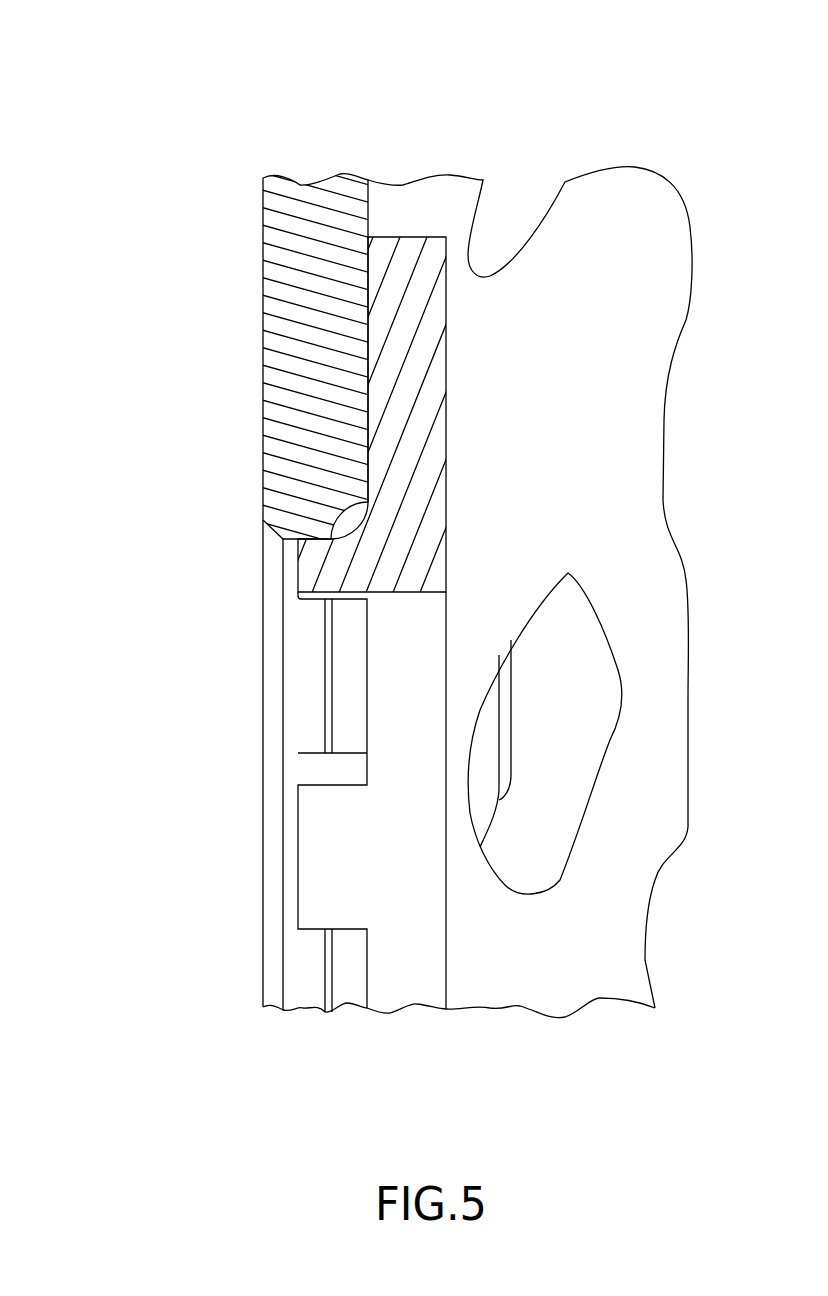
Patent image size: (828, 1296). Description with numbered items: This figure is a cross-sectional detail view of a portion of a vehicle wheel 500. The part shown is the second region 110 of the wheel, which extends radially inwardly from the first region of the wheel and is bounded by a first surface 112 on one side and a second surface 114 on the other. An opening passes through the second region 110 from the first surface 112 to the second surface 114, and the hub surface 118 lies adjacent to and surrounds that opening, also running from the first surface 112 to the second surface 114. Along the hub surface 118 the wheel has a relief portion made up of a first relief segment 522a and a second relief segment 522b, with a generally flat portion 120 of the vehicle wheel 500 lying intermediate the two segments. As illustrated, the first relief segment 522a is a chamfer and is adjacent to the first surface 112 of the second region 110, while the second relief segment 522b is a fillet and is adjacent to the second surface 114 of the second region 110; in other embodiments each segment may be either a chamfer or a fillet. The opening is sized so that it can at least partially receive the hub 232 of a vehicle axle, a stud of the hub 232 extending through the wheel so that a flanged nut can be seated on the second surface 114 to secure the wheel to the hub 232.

The second region 110 is at (307, 133).
The vehicle wheel 500 is at (607, 136).
The first surface 112 is at (261, 355).
The hub surface 118 is at (118, 603).
The first relief segment 522a is at (276, 658).
The second relief segment 522b is at (357, 687).
The generally flat portion 120 is at (314, 713).
The hub 232 is at (318, 878).
The second surface 114 is at (556, 962).